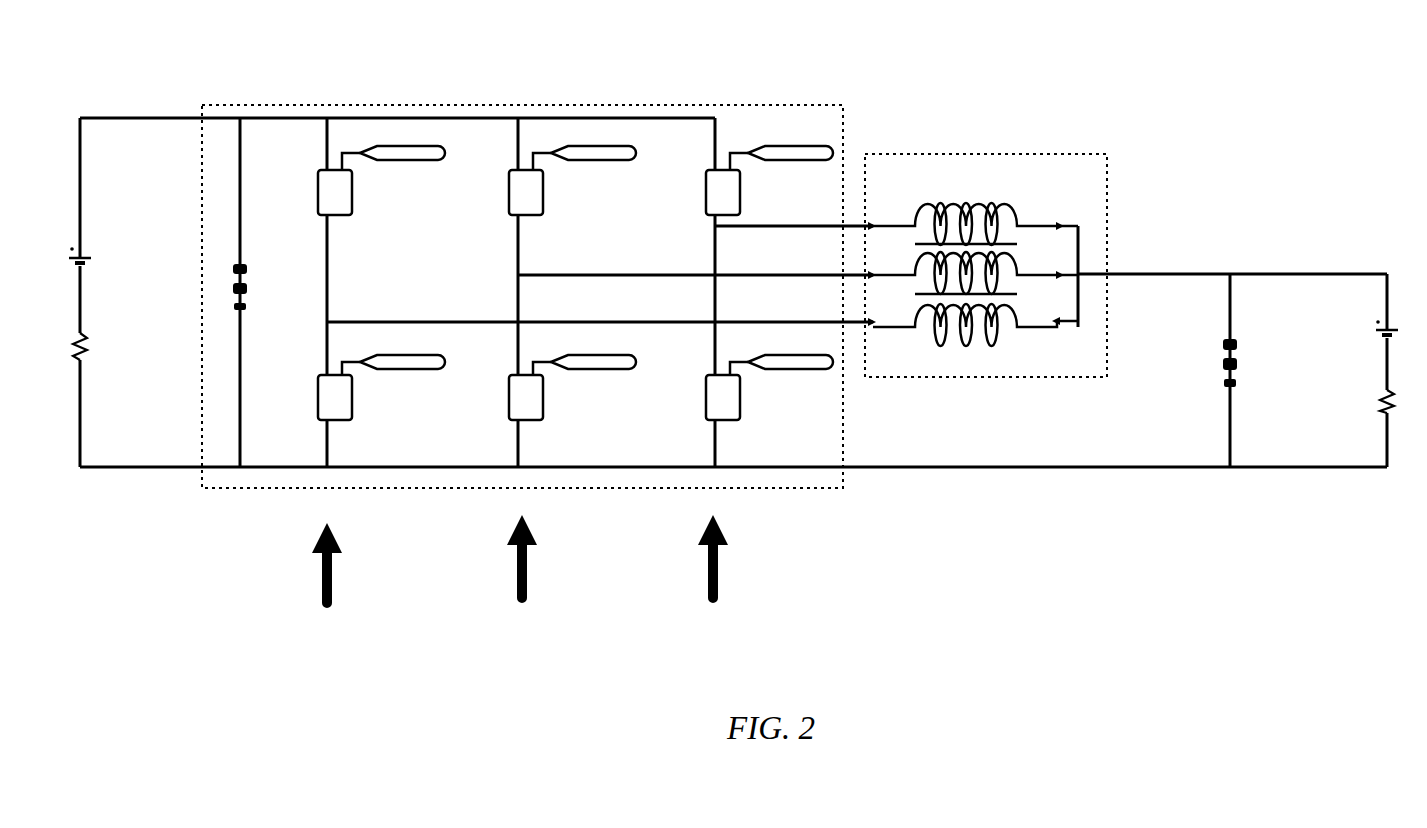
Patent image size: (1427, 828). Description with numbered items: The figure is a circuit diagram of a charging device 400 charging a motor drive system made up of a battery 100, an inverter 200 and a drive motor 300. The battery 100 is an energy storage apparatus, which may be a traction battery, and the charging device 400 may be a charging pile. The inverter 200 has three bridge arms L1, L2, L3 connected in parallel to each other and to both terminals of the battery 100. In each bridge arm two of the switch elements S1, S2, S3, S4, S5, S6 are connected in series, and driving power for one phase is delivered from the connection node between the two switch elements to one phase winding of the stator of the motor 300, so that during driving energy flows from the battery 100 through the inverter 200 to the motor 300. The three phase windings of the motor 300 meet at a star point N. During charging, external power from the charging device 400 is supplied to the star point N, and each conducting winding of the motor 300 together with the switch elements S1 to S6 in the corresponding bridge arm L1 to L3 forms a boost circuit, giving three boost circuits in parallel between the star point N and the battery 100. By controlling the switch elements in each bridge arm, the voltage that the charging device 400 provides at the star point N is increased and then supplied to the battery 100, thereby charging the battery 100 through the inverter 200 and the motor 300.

The battery 100 is at (80, 245).
The inverter 200 is at (543, 244).
The drive motor 300 is at (975, 154).
The charging device 400 is at (1378, 332).
The star point N is at (1079, 268).
The switch element S1 is at (381, 246).
The switch element S2 is at (752, 411).
The switch element S3 is at (572, 246).
The switch element S4 is at (381, 411).
The switch element S5 is at (750, 246).
The switch element S6 is at (572, 411).
The bridge arm L1 is at (328, 592).
The bridge arm L2 is at (524, 584).
The bridge arm L3 is at (715, 584).